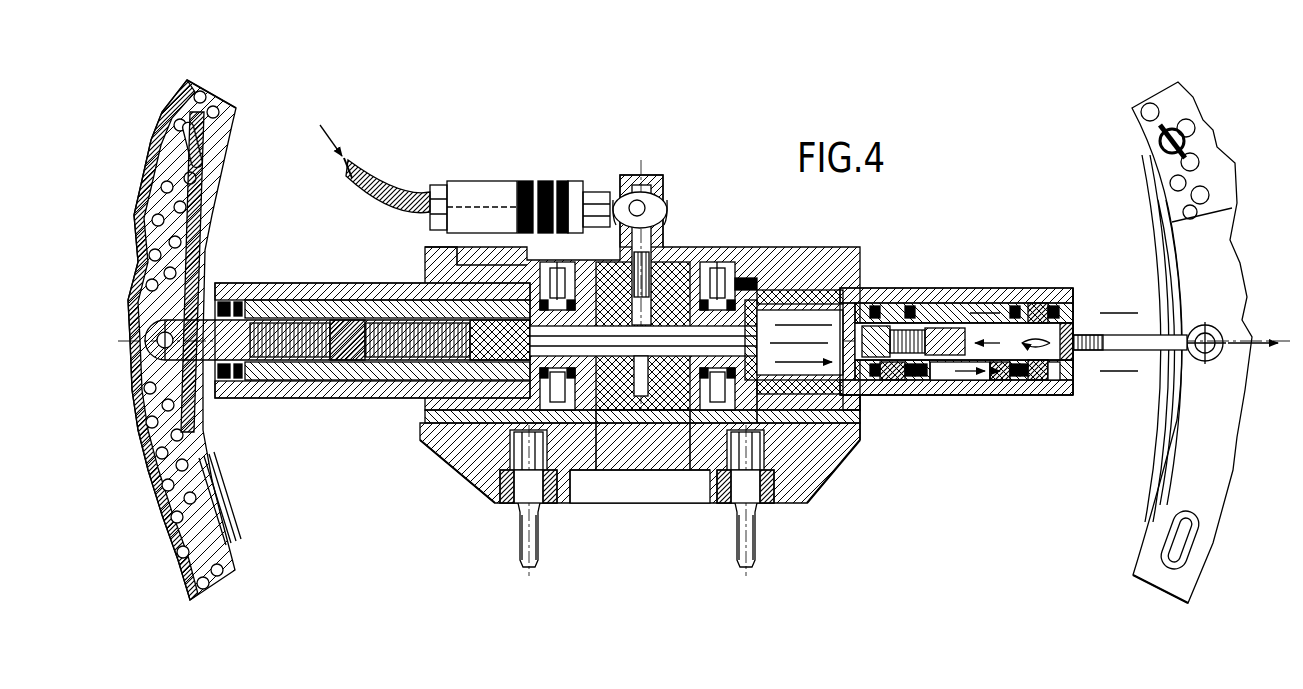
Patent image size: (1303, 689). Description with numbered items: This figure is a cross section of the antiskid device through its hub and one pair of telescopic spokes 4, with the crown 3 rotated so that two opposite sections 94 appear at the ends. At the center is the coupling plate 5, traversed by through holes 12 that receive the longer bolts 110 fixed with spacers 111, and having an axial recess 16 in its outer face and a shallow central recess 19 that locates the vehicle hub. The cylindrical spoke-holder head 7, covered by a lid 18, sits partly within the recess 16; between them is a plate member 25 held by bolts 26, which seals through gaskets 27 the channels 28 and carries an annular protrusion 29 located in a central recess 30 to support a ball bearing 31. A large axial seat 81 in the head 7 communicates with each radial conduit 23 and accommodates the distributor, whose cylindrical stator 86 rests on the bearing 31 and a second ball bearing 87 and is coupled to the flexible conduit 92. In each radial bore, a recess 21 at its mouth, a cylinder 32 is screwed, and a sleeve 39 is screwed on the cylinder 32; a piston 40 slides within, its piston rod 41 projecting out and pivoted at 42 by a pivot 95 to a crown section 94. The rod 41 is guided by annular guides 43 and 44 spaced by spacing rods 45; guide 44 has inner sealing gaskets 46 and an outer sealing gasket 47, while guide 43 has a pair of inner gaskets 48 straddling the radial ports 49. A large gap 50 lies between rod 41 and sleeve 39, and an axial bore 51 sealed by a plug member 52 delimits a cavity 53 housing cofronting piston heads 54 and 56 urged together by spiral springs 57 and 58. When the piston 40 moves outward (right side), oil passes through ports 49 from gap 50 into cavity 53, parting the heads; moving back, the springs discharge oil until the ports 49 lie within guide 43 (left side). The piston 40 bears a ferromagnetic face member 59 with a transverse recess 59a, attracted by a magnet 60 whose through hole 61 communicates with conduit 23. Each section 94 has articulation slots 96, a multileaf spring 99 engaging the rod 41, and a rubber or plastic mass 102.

The peripheral crown 3 is at (149, 171).
The telescopic spoke 4 is at (302, 286).
The coupling plate 5 is at (457, 478).
The spoke-holder head 7 is at (455, 278).
The through hole 12 is at (496, 460).
The axial recess 16 is at (842, 440).
The lid 18 is at (428, 262).
The shallow central recess 19 is at (705, 425).
The recess 21 is at (820, 282).
The radial conduit 23 is at (705, 262).
The plate member 25 is at (586, 520).
The bolt 26 is at (684, 490).
The gasket 27 is at (812, 468).
The channel 28 is at (790, 440).
The annular protrusion 29 is at (672, 460).
The central recess 30 is at (566, 548).
The ball bearing 31 is at (618, 470).
The cylinder 32 is at (880, 395).
The sleeve 39 is at (983, 300).
The piston 40 is at (874, 303).
The piston rod 41 is at (229, 362).
The pivot axis 42 is at (197, 276).
The annular guide 43 is at (920, 306).
The annular guide 44 is at (1053, 305).
The spacing rod 45 is at (1006, 323).
The inner sealing gasket 46 is at (1072, 305).
The outer sealing gasket 47 is at (1027, 335).
The inner gasket 48 is at (942, 380).
The radial port 49 is at (1013, 380).
The gap 50 is at (987, 380).
The axial bore 51 is at (1053, 380).
The plug member 52 is at (903, 398).
The inner cavity 53 is at (1030, 380).
The piston head 54 is at (352, 362).
The piston head 56 is at (333, 368).
The spiral spring 57 is at (960, 380).
The spiral spring 58 is at (1108, 352).
The ferromagnetic face member 59 is at (862, 290).
The transverse recess 59a is at (868, 405).
The magnet 60 is at (743, 280).
The through hole 61 is at (760, 300).
The seat 81 is at (700, 245).
The cylindrical stator 86 is at (653, 207).
The ball bearing 87 is at (664, 203).
The flexible conduit 92 is at (382, 189).
The crown section 94 is at (1137, 573).
The pivot 95 is at (1215, 330).
The articulation slot 96 is at (1167, 528).
The multileaf spring 99 is at (224, 512).
The mass 102 is at (185, 105).
The bolt 110 is at (520, 548).
The spacer 111 is at (510, 505).